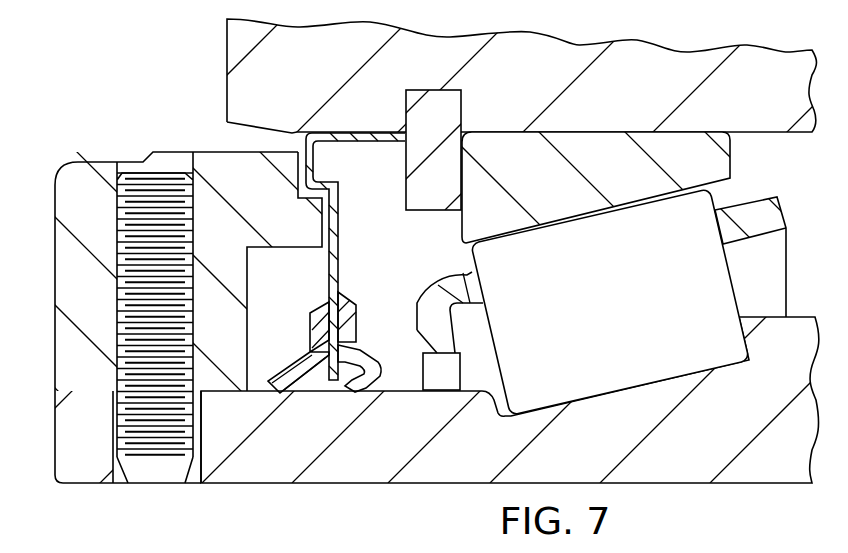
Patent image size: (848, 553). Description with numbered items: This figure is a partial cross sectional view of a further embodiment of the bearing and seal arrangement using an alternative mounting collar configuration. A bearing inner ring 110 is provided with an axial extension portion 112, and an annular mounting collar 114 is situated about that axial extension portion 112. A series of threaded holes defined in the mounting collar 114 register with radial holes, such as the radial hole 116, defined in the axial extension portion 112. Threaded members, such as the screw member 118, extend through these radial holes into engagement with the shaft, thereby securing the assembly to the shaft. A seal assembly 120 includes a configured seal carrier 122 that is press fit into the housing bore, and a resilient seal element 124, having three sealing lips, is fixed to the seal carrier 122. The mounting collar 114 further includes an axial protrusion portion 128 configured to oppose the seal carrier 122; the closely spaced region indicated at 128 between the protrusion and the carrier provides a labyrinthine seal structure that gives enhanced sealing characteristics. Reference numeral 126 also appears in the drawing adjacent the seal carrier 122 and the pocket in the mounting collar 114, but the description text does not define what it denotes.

The bearing inner ring 110 is at (365, 485).
The axial extension portion 112 is at (55, 420).
The annular mounting collar 114 is at (82, 163).
The radial hole 116 is at (195, 475).
The screw member 118 is at (170, 173).
The seal assembly 120 is at (366, 268).
The seal carrier 122 is at (337, 200).
The resilient seal element 124 is at (307, 362).
The chamber 126 is at (296, 247).
The axial protrusion portion 128 is at (315, 190).